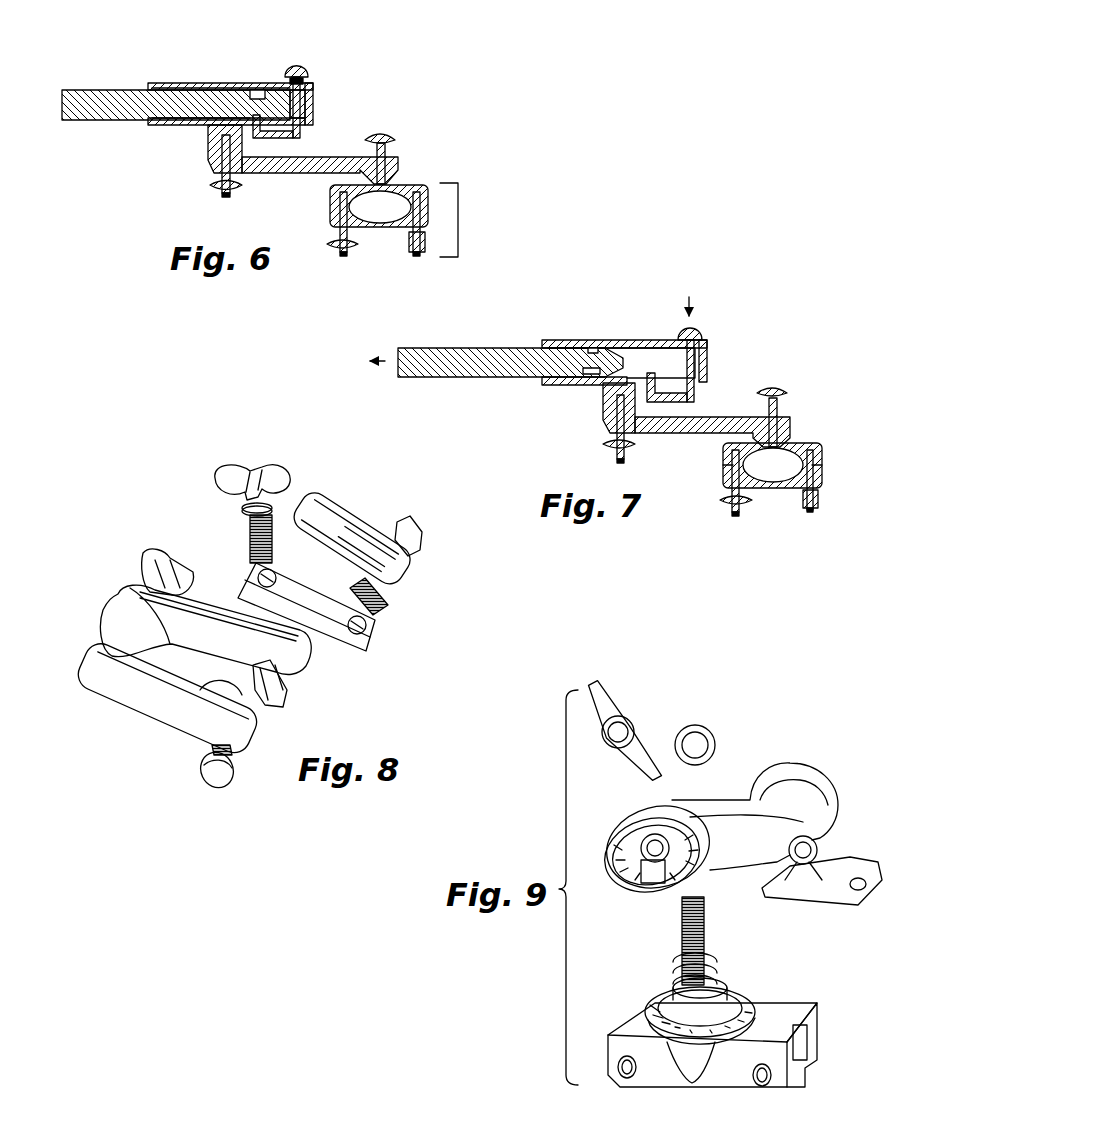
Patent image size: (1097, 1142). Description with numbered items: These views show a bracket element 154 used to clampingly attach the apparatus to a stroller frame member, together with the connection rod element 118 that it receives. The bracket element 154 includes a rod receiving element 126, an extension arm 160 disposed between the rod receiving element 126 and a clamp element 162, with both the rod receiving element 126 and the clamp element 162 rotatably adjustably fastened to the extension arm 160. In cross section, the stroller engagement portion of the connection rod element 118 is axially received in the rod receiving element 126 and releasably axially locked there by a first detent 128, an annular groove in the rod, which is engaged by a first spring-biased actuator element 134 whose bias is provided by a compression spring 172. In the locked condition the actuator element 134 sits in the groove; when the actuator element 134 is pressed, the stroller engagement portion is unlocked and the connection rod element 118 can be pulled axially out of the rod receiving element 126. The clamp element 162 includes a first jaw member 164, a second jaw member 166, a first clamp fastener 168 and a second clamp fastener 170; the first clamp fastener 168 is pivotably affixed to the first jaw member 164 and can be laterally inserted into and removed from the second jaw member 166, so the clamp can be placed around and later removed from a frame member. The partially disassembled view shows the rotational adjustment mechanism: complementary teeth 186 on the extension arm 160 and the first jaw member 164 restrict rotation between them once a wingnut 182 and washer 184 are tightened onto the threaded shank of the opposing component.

In FIG. 6, the connection rod element 118 is at (98, 90).
In FIG. 7, the connection rod element 118 is at (467, 348).
In FIG. 6, the rod receiving element 126 is at (160, 83).
In FIG. 7, the rod receiving element 126 is at (555, 340).
In FIG. 8, the rod receiving element 126 is at (130, 709).
In FIG. 9, the rod receiving element 126 is at (722, 797).
In FIG. 6, the first detent 128 is at (258, 95).
In FIG. 7, the first detent 128 is at (592, 348).
In FIG. 6, the first spring-biased actuator element 134 is at (297, 64).
In FIG. 7, the first spring-biased actuator element 134 is at (698, 325).
In FIG. 8, the first spring-biased actuator element 134 is at (214, 791).
In FIG. 6, the bracket element 154 is at (412, 106).
In FIG. 7, the bracket element 154 is at (788, 345).
In FIG. 8, the bracket element 154 is at (131, 470).
In FIG. 6, the extension arm 160 is at (297, 174).
In FIG. 7, the extension arm 160 is at (693, 434).
In FIG. 8, the extension arm 160 is at (225, 602).
In FIG. 9, the extension arm 160 is at (808, 802).
In FIG. 6, the clamp element 162 is at (458, 222).
In FIG. 7, the first jaw member 164 is at (824, 455).
In FIG. 8, the first jaw member 164 is at (364, 643).
In FIG. 9, the first jaw member 164 is at (816, 1020).
In FIG. 7, the second jaw member 166 is at (822, 472).
In FIG. 8, the second jaw member 166 is at (390, 589).
In FIG. 7, the first clamp fastener 168 is at (735, 516).
In FIG. 8, the first clamp fastener 168 is at (241, 528).
In FIG. 7, the second clamp fastener 170 is at (810, 513).
In FIG. 8, the second clamp fastener 170 is at (367, 608).
In FIG. 6, the compression spring 172 is at (305, 80).
In FIG. 7, the wingnut 182 is at (787, 393).
In FIG. 8, the wingnut 182 is at (283, 680).
In FIG. 9, the wingnut 182 is at (612, 707).
In FIG. 9, the washer 184 is at (706, 728).
In FIG. 9, the complementary teeth 186 is at (651, 889).